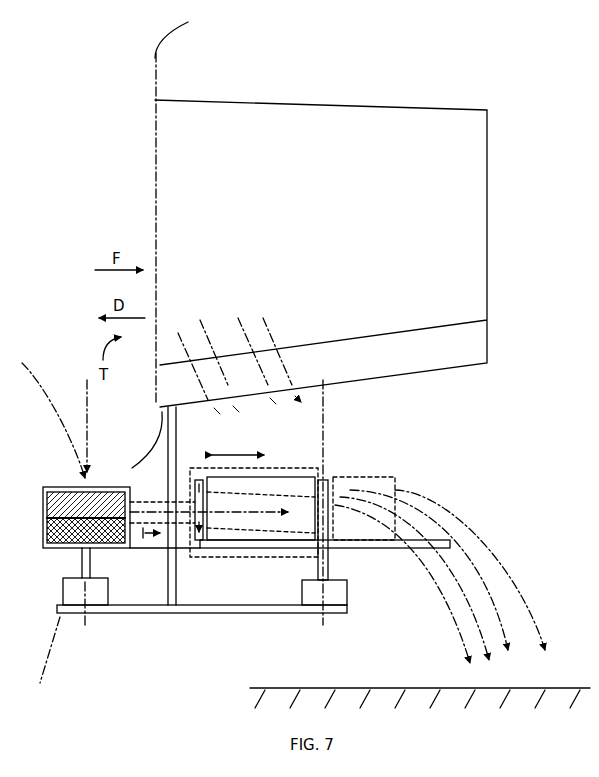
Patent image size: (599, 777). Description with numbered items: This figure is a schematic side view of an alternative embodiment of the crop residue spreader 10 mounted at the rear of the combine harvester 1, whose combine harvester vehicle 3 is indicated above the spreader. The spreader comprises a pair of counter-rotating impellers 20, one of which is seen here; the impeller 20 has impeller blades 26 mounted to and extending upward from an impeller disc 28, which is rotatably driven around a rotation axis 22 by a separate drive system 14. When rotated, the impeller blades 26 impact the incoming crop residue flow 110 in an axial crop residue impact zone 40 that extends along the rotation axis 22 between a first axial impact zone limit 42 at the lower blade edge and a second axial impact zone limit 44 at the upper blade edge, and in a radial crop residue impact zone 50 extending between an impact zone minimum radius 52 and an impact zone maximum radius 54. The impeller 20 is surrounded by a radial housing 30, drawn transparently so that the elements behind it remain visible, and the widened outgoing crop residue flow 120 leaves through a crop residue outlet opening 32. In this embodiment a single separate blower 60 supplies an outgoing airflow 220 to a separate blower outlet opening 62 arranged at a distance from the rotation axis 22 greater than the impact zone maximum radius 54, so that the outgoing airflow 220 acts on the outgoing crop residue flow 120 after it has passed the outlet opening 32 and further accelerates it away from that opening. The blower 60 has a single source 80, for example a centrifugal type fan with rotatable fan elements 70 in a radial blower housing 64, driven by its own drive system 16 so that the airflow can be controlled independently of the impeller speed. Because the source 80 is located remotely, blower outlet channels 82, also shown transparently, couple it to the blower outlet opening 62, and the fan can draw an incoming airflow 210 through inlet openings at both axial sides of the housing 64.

The harvester 1 is at (248, 74).
The combine harvester vehicle 3 is at (345, 118).
The crop residue spreader 10 is at (415, 418).
The drive system for the impellers 14 is at (307, 592).
The drive system for the source 16 is at (72, 598).
The impeller 20 is at (245, 548).
The rotation axis 22 is at (330, 395).
The impeller blades 26 is at (260, 476).
The impeller disc 28 is at (272, 548).
The radial housing 30 is at (200, 565).
The crop residue outlet opening 32 is at (440, 515).
The axial crop residue impact zone 40 is at (192, 498).
The first axial impact zone limit 42 is at (190, 540).
The second axial impact zone limit 44 is at (188, 478).
The radial crop residue impact zone 50 is at (247, 455).
The impact zone minimum radius 52 is at (268, 445).
The impact zone maximum radius 54 is at (208, 445).
The separate blower 60 is at (96, 468).
The separate blower outlet opening 62 is at (320, 514).
The radial blower housing 64 is at (43, 520).
The fan elements 70 is at (45, 490).
The source 80 is at (52, 556).
The blower outlet channels 82 is at (145, 543).
The incoming crop residue flow 110 is at (277, 322).
The outgoing crop residue flow 120 is at (492, 540).
The incoming airflow 210 is at (66, 410).
The outgoing airflow 220 is at (328, 575).